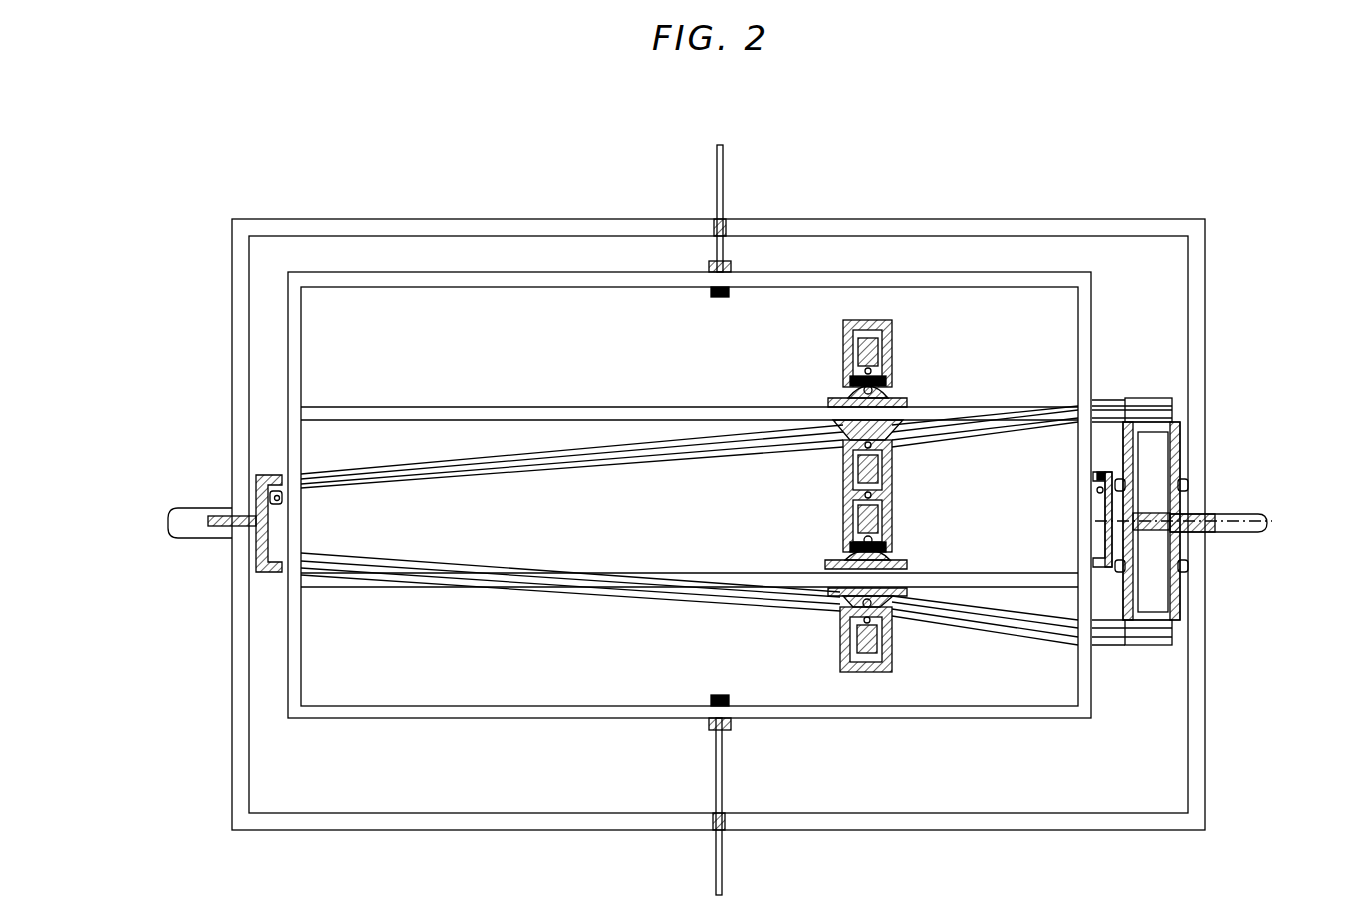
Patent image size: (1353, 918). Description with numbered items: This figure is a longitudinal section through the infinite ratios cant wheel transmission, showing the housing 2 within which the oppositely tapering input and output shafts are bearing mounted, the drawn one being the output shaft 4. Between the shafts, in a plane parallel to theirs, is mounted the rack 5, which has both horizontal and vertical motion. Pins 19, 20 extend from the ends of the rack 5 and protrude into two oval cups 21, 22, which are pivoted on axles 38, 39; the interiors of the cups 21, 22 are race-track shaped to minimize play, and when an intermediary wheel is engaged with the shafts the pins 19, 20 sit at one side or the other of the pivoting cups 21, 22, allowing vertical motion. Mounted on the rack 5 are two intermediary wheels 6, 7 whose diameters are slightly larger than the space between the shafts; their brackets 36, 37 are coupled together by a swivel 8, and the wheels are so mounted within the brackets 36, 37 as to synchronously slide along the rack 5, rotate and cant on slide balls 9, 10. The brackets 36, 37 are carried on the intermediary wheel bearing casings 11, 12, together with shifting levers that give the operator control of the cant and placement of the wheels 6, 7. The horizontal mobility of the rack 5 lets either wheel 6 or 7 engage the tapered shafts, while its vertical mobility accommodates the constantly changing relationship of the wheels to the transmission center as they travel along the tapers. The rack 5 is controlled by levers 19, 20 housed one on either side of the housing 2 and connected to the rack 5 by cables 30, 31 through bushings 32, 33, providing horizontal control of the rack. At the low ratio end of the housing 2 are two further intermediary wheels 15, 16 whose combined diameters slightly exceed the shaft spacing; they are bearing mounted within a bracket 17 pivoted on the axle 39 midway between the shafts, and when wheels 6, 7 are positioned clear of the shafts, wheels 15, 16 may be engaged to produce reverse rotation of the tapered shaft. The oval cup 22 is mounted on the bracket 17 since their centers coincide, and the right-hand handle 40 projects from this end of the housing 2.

The housing 2 is at (308, 226).
The output shaft 4 is at (650, 597).
The rack 5 is at (1088, 342).
The intermediary wheel 6 is at (875, 670).
The intermediary wheel 7 is at (880, 336).
The swivel 8 is at (892, 496).
The slide ball 9 is at (907, 558).
The slide ball 10 is at (907, 397).
The intermediary wheel bearing casing 11 is at (845, 535).
The intermediary wheel bearing casing 12 is at (845, 380).
The intermediary wheel 15 is at (1162, 595).
The intermediary wheel 16 is at (1160, 442).
The bracket 17 is at (1180, 490).
The pin 19 is at (282, 497).
The pin 20 is at (1096, 490).
The oval cup 21 is at (266, 548).
The oval cup 22 is at (1105, 522).
The cable 30 is at (723, 152).
The cable 31 is at (722, 882).
The bushing 32 is at (729, 262).
The bushing 33 is at (729, 727).
The bracket 36 is at (845, 352).
The bracket 37 is at (840, 665).
The axle 38 is at (210, 520).
The axle 39 is at (1140, 535).
The right handle 40 is at (1267, 524).